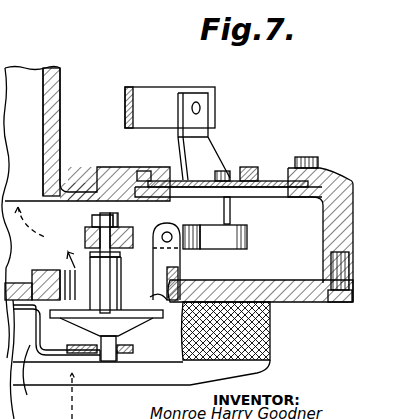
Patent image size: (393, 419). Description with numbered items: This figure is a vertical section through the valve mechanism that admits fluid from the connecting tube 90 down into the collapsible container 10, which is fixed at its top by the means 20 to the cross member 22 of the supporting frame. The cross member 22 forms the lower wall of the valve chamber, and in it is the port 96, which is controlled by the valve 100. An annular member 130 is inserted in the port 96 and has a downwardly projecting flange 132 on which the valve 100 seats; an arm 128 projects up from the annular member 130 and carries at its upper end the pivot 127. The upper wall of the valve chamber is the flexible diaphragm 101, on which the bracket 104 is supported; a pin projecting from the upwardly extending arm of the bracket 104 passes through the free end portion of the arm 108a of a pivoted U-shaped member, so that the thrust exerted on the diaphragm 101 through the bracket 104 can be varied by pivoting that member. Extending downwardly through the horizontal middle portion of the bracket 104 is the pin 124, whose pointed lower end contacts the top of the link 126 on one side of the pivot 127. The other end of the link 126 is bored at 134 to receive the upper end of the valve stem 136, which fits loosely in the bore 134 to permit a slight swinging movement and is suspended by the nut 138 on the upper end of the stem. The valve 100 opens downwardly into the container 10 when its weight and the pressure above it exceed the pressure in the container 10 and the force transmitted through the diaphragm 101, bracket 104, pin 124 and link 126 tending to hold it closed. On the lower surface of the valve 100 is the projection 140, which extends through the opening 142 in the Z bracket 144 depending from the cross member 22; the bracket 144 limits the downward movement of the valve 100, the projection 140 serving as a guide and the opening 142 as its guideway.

The container 10 is at (267, 375).
The means 20 is at (270, 350).
The cross member 22 is at (300, 303).
The tube 90 is at (55, 83).
The port 96 is at (122, 283).
The valve 100 is at (128, 327).
The flexible diaphragm 101 is at (274, 184).
The bracket 104 is at (210, 152).
The arm 108a is at (158, 90).
The pin 124 is at (232, 218).
The link 126 is at (243, 244).
The pivot 127 is at (168, 233).
The arm 128 is at (192, 247).
The annular member 130 is at (57, 271).
The flange 132 is at (160, 296).
The bore 134 is at (93, 235).
The valve stem 136 is at (120, 255).
The nut 138 is at (113, 226).
The projection 140 is at (110, 362).
The opening 142 is at (97, 340).
The Z bracket 144 is at (42, 378).